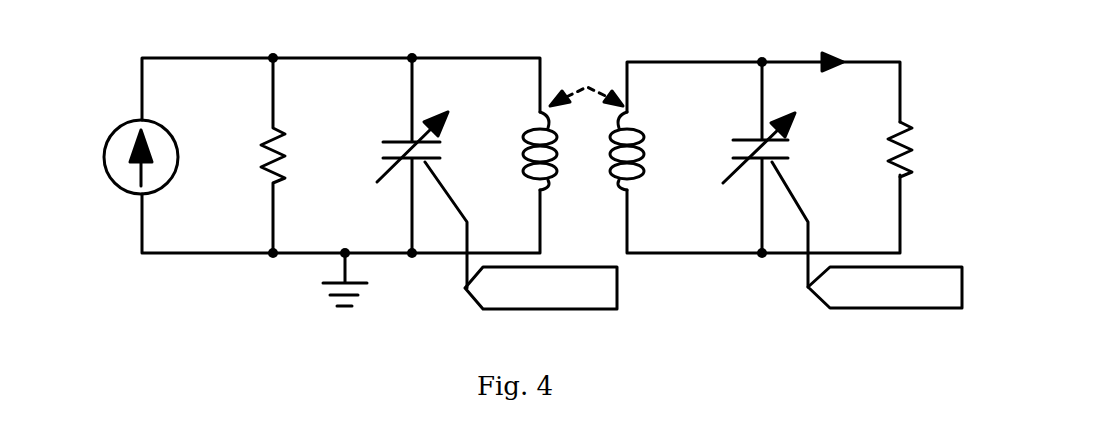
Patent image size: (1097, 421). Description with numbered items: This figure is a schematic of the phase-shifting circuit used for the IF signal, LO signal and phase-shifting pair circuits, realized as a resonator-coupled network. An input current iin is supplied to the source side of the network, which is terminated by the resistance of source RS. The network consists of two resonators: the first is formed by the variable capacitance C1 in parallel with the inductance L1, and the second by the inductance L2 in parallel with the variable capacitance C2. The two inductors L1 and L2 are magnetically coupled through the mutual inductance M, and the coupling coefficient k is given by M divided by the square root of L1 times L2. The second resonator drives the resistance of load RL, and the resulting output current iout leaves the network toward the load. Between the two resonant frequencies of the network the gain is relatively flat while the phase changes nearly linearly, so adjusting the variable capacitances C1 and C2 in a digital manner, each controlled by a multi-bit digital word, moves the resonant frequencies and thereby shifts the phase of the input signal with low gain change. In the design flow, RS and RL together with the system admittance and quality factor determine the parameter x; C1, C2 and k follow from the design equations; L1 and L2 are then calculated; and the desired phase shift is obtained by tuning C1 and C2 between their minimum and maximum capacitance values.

The input current iin is at (117, 157).
The resistance of source RS is at (245, 155).
The variable capacitance C1 is at (476, 183).
The inductance L1 is at (514, 151).
The mutual inductance M is at (586, 77).
The inductance L2 is at (655, 151).
The variable capacitance C2 is at (842, 185).
The resistance of load RL is at (927, 150).
The output current iout is at (831, 35).